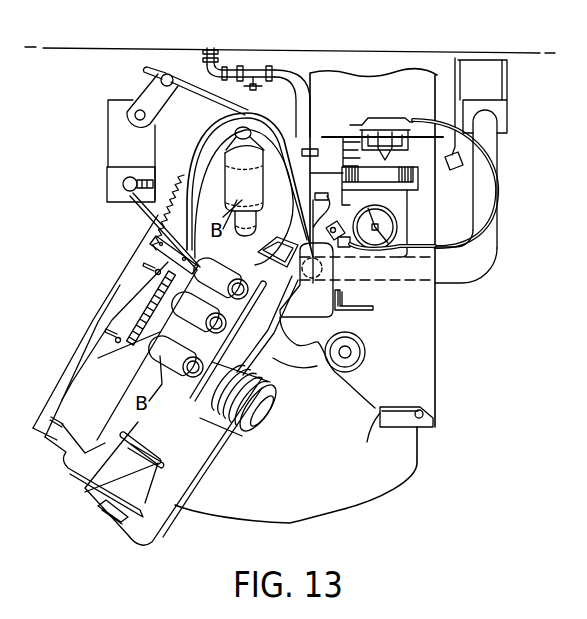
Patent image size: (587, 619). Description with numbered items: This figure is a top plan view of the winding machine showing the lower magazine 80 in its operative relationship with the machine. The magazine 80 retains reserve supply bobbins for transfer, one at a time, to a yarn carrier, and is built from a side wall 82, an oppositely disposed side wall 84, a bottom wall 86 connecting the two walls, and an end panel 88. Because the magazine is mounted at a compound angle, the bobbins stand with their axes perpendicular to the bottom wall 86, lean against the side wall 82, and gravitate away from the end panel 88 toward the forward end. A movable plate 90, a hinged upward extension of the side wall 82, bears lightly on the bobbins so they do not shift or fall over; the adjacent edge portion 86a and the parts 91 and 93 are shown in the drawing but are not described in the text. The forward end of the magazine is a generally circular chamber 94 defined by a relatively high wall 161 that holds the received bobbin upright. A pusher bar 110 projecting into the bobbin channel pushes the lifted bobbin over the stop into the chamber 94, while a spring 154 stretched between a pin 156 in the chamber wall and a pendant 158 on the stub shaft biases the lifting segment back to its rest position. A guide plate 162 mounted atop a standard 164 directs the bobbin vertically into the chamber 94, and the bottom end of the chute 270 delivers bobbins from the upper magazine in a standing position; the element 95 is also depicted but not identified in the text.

The lower magazine 80 is at (65, 399).
The side wall 82 is at (162, 507).
The side wall 84 is at (157, 247).
The bottom wall 86 is at (80, 466).
The plate flange 86a is at (86, 362).
The end panel 88 is at (110, 462).
The movable plate 90 is at (143, 315).
The guide plate 91 is at (150, 290).
The pins 93 is at (155, 272).
The circular chamber 94 is at (177, 166).
The cable 95 is at (390, 133).
The pusher bar 110 is at (103, 497).
The spring 154 is at (156, 200).
The pin 156 is at (183, 178).
The pendant 158 is at (125, 248).
The wall 161 is at (214, 123).
The guide plate 162 is at (309, 133).
The standard 164 is at (328, 192).
The chute 270 is at (242, 432).